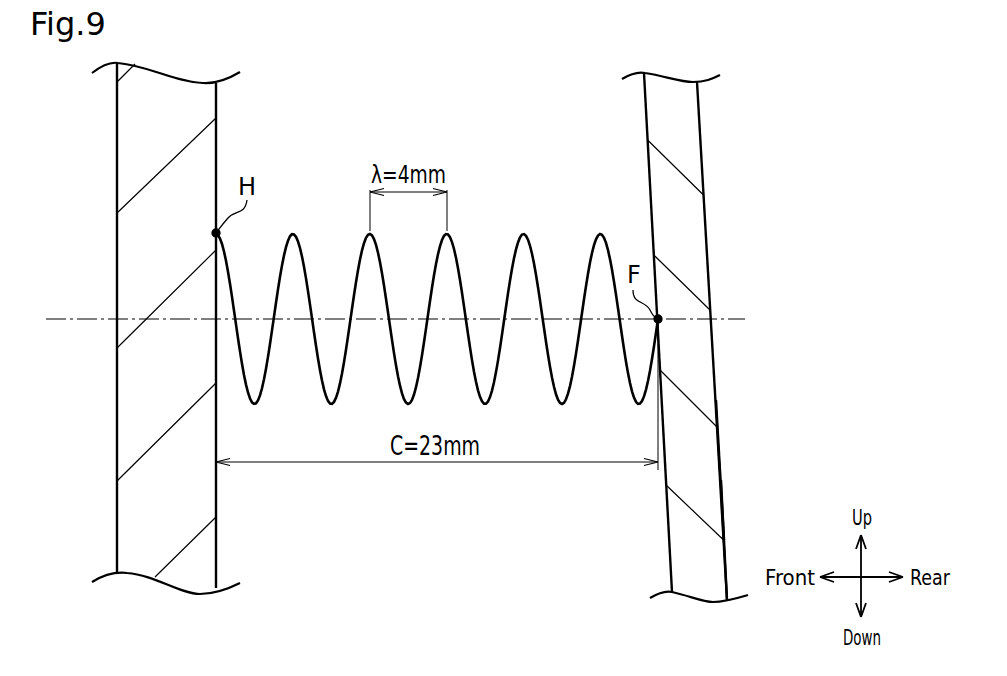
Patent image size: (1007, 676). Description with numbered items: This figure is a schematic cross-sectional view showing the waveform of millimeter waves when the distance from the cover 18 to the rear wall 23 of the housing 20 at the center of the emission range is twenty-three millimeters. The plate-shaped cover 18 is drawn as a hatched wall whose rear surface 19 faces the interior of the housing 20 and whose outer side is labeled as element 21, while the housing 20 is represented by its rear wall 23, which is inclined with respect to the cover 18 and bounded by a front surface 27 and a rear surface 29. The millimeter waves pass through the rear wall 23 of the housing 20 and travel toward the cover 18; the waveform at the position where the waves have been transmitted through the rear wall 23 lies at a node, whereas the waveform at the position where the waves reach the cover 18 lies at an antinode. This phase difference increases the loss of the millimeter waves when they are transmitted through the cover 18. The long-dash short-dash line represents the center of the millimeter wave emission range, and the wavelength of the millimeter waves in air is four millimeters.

The cover 18 is at (168, 328).
The rear surface 19 is at (217, 537).
The housing 20 is at (720, 462).
The first wall outer surface 21 is at (117, 258).
The rear wall 23 is at (723, 512).
The front surface 27 is at (670, 550).
The rear surface 29 is at (693, 337).